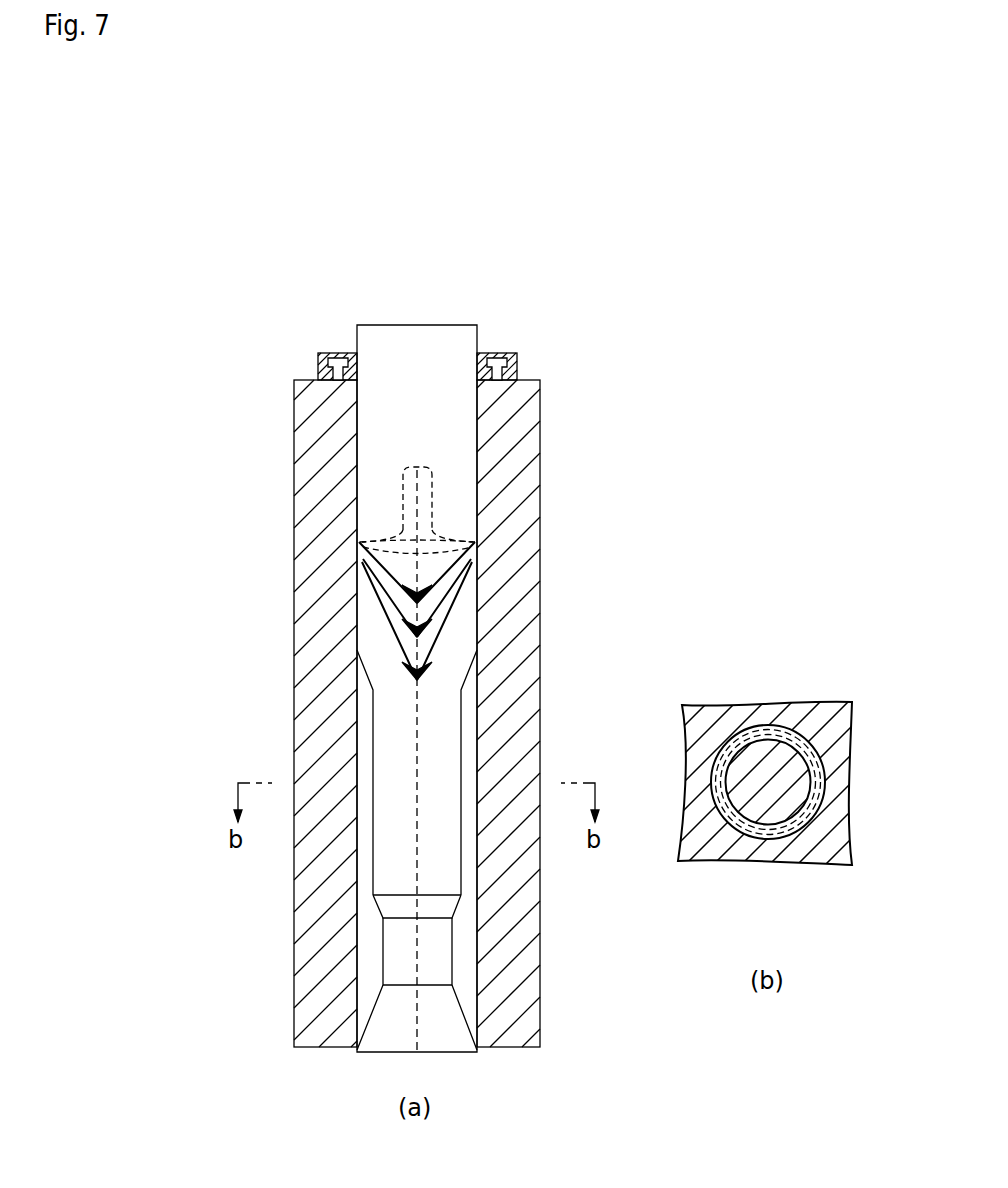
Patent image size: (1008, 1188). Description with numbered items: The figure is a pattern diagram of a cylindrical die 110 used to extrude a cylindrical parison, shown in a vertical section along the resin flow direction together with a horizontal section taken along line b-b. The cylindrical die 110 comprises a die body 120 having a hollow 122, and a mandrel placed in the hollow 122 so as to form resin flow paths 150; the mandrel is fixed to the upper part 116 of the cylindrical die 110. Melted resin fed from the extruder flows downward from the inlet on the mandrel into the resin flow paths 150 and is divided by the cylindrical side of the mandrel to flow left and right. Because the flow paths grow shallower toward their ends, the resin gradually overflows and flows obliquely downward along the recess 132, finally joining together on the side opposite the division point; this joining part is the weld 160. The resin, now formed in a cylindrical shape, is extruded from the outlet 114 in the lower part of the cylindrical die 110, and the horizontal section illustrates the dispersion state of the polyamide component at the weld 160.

The cylindrical die 110 is at (568, 450).
The outlet 114 is at (473, 1013).
The upper part 116 is at (515, 355).
The die body 120 is at (520, 502).
The hollow 122 is at (474, 716).
The recess 132 is at (472, 552).
The resin flow paths 150 is at (465, 918).
The weld 160 is at (424, 945).